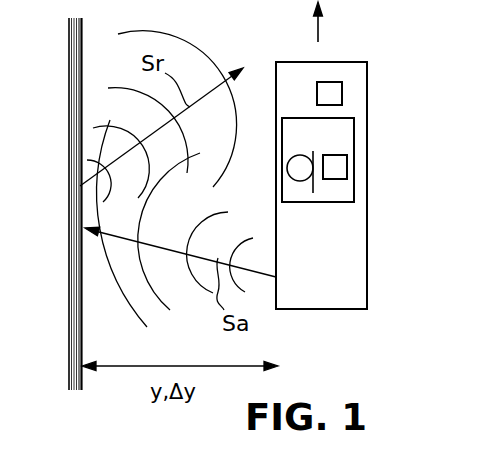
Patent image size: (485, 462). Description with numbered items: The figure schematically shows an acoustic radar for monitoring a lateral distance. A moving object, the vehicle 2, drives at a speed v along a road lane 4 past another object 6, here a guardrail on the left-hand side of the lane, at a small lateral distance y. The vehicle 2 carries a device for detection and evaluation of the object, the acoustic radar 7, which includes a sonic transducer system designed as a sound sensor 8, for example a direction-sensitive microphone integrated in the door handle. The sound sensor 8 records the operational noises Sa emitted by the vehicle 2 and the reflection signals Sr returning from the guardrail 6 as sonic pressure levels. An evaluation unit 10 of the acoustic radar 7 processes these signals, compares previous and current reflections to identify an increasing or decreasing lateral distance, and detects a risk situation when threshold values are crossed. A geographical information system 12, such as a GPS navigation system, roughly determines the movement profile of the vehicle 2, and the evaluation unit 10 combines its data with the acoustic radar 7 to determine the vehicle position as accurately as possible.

The vehicle 2 is at (367, 248).
The road lane 4 is at (320, 26).
The guardrail 6 is at (79, 265).
The acoustic radar 7 is at (354, 137).
The sound sensor 8 is at (300, 181).
The evaluation unit 10 is at (347, 170).
The geographical information system 12 is at (342, 90).